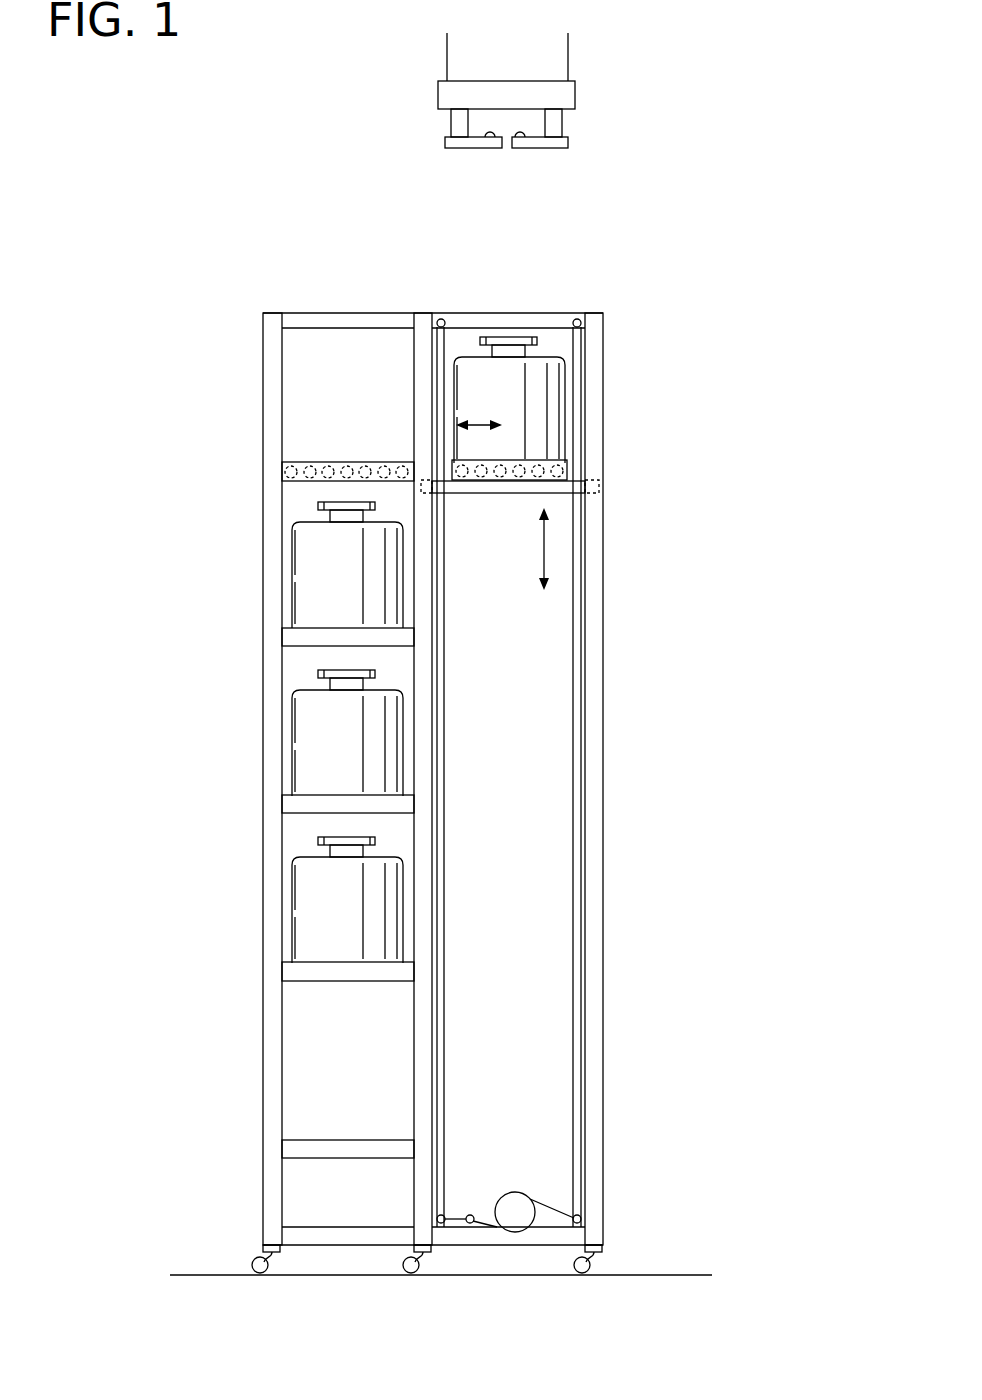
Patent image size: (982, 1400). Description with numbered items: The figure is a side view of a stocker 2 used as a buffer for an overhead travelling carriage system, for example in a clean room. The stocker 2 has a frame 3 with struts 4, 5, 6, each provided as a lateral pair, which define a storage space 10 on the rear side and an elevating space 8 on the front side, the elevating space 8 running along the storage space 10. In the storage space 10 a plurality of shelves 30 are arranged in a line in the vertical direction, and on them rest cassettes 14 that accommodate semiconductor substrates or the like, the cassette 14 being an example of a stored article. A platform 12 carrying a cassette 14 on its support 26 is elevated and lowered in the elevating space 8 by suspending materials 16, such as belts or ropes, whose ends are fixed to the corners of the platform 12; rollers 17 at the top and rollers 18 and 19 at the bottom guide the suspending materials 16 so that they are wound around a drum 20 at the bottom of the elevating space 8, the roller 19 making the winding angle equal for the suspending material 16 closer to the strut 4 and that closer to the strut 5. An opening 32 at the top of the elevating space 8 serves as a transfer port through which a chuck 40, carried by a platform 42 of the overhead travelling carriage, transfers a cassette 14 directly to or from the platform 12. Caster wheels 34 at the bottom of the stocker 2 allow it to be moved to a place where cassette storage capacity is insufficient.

The stocker 2 is at (252, 276).
The frame 3 is at (610, 845).
The strut 4 is at (590, 710).
The strut 5 is at (432, 712).
The strut 6 is at (268, 700).
The elevating space 8 is at (550, 780).
The storage space 10 is at (315, 408).
The platform 12 is at (493, 495).
The cassette 14 is at (313, 562).
The suspending material 16 is at (581, 870).
The roller 17 is at (441, 318).
The roller 18 is at (441, 1230).
The roller 19 is at (470, 1215).
The drum 20 is at (518, 1200).
The lift platform 26 is at (567, 468).
The shelf 30 is at (372, 462).
The opening 32 is at (505, 312).
The caster wheel 34 is at (410, 1258).
The chuck 40 is at (485, 148).
The platform 42 is at (568, 95).